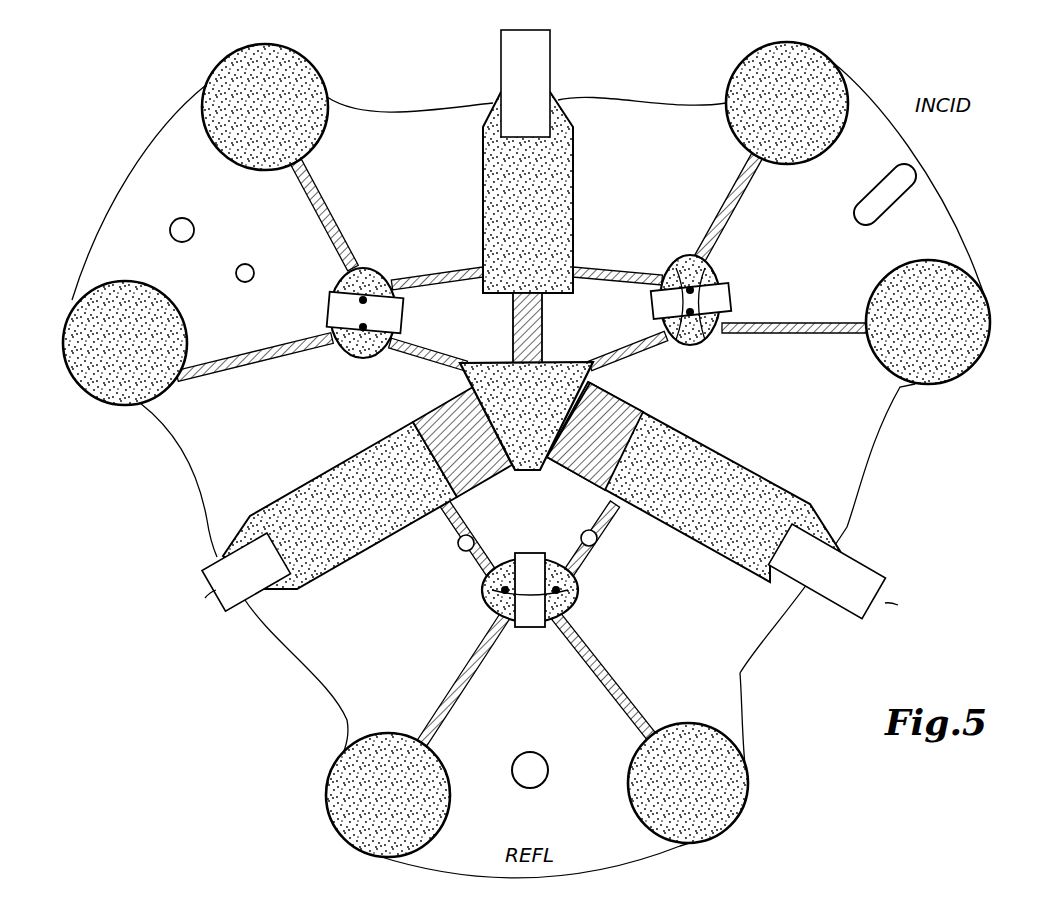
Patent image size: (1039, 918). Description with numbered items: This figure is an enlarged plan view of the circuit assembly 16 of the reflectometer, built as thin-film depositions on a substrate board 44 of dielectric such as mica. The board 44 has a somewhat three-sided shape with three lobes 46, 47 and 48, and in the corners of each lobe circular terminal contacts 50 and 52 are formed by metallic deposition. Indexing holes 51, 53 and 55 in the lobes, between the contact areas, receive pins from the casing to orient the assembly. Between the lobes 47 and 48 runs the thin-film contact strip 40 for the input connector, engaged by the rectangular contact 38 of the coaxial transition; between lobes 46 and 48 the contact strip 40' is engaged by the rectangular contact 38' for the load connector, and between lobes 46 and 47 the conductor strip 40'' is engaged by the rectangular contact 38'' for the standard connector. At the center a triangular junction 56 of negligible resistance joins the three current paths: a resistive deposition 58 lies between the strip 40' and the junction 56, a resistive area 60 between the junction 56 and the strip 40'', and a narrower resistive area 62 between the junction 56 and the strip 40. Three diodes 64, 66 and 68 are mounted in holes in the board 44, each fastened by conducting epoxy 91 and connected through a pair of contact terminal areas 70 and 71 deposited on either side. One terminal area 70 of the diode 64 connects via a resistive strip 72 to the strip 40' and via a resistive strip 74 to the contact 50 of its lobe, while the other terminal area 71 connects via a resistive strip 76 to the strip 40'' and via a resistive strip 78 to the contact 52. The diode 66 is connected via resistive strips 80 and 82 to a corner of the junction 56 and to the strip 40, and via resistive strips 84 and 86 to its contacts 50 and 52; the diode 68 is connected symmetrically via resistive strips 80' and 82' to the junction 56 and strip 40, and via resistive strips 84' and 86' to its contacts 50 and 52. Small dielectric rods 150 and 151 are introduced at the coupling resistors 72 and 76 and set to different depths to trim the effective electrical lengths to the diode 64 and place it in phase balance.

The circuit assembly 16 is at (297, 665).
The rectangular contact 38 is at (547, 70).
The rectangular contact 38' is at (220, 572).
The rectangular contact 38'' is at (890, 571).
The thin-film contact strip 40 is at (549, 182).
The contact strip 40' is at (340, 505).
The conductor strip 40'' is at (724, 482).
The substrate board 44 is at (345, 720).
The lobe 46 is at (655, 862).
The lobe 47 is at (962, 215).
The lobe 48 is at (127, 183).
The circular terminal contact 50 is at (66, 325).
The indexing hole 51 is at (882, 218).
The circular terminal contact 52 is at (293, 62).
The indexing hole 53 is at (195, 228).
The indexing hole 55 is at (544, 775).
The junction 56 is at (520, 478).
The resistive metallic deposition 58 is at (447, 410).
The resistive area 60 is at (638, 408).
The resistive area 62 is at (544, 328).
The diode 64 is at (527, 630).
The diode 66 is at (730, 295).
The diode 68 is at (328, 312).
The contact terminal area 70 is at (365, 360).
The contact terminal area 71 is at (368, 278).
The resistive deposition strip 72 is at (464, 514).
The resistive deposition strip 74 is at (462, 702).
The resistive strip 76 is at (600, 520).
The resistive strip 78 is at (622, 682).
The resistive strip 80 is at (629, 361).
The resistive strip 80' is at (428, 345).
The resistive strip 82 is at (618, 259).
The resistive strip 82' is at (437, 263).
The resistive strip 84 is at (795, 309).
The resistive strip 84' is at (255, 364).
The resistive strip 86 is at (740, 207).
The resistive strip 86' is at (332, 215).
The conducting epoxy 91 is at (678, 268).
The dielectric rod 150 is at (476, 543).
The dielectric rod 151 is at (597, 542).